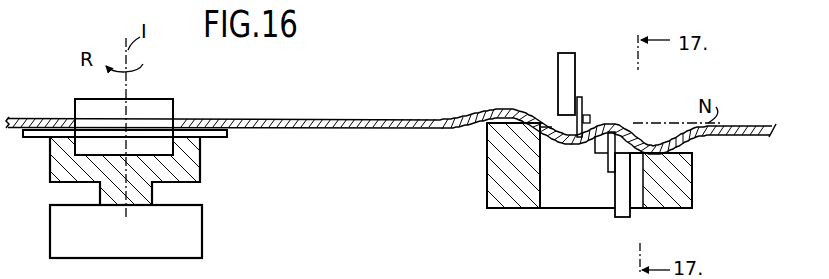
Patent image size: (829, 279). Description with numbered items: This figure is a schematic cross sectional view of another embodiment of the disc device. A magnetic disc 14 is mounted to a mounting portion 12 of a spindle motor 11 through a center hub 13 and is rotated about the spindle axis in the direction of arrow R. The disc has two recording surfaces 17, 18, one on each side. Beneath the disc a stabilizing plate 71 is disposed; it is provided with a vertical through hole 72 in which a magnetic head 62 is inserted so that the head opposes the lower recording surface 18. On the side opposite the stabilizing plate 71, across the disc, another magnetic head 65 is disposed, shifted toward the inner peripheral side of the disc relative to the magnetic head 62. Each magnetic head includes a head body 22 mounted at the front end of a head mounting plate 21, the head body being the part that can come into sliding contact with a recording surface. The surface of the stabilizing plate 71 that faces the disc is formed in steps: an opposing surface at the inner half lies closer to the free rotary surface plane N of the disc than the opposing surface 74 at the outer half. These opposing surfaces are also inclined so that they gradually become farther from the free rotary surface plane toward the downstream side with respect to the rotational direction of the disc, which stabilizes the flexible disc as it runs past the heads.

The spindle motor 11 is at (185, 222).
The mounting portion 12 is at (193, 171).
The center hub 13 is at (158, 113).
The magnetic disc 14 is at (752, 130).
The recording surface 17 is at (347, 121).
The recording surface 18 is at (360, 132).
The head mounting plate 21 is at (558, 70).
The head body 22 is at (582, 105).
The magnetic head 62 is at (615, 223).
The magnetic head 65 is at (578, 72).
The stabilizing plate 71 is at (470, 190).
The through hole 72 is at (558, 193).
The opposing surface 74 is at (682, 152).